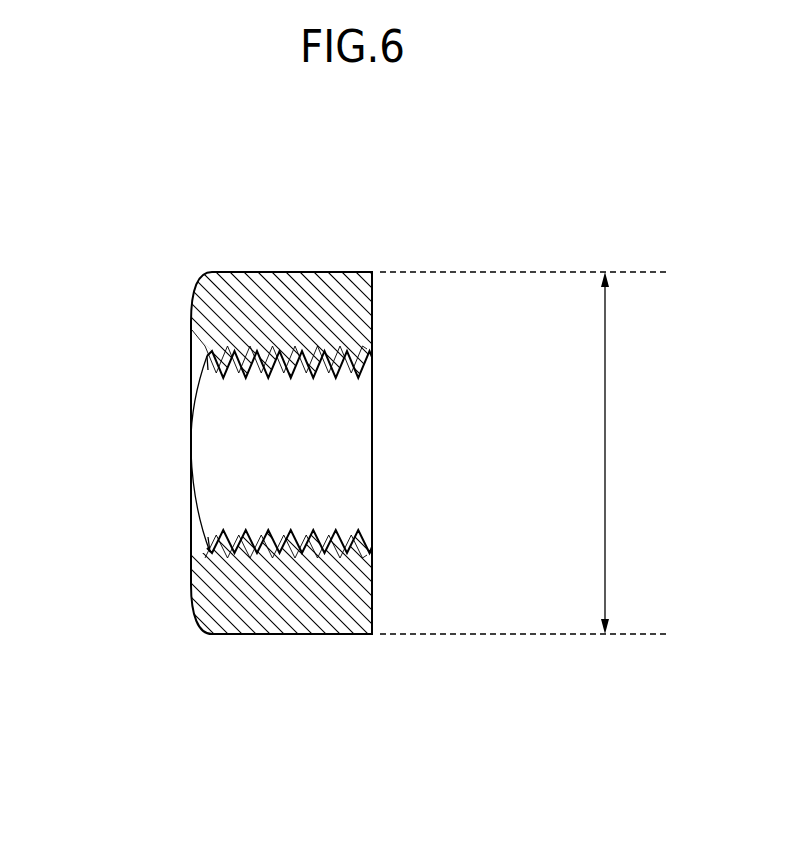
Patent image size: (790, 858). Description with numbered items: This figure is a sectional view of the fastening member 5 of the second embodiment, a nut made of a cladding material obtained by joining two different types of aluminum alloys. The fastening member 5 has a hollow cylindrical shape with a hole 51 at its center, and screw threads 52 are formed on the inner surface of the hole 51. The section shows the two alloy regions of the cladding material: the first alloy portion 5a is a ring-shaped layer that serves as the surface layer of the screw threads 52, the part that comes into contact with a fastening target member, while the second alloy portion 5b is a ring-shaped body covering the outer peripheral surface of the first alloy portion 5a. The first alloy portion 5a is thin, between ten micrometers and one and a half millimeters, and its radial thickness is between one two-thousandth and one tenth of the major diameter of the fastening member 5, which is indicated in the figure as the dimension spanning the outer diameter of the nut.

The fastening member 5 is at (439, 196).
The first alloy portion 5a is at (372, 360).
The second alloy portion 5b is at (267, 296).
The hole 51 is at (242, 452).
The screw threads 52 is at (258, 381).